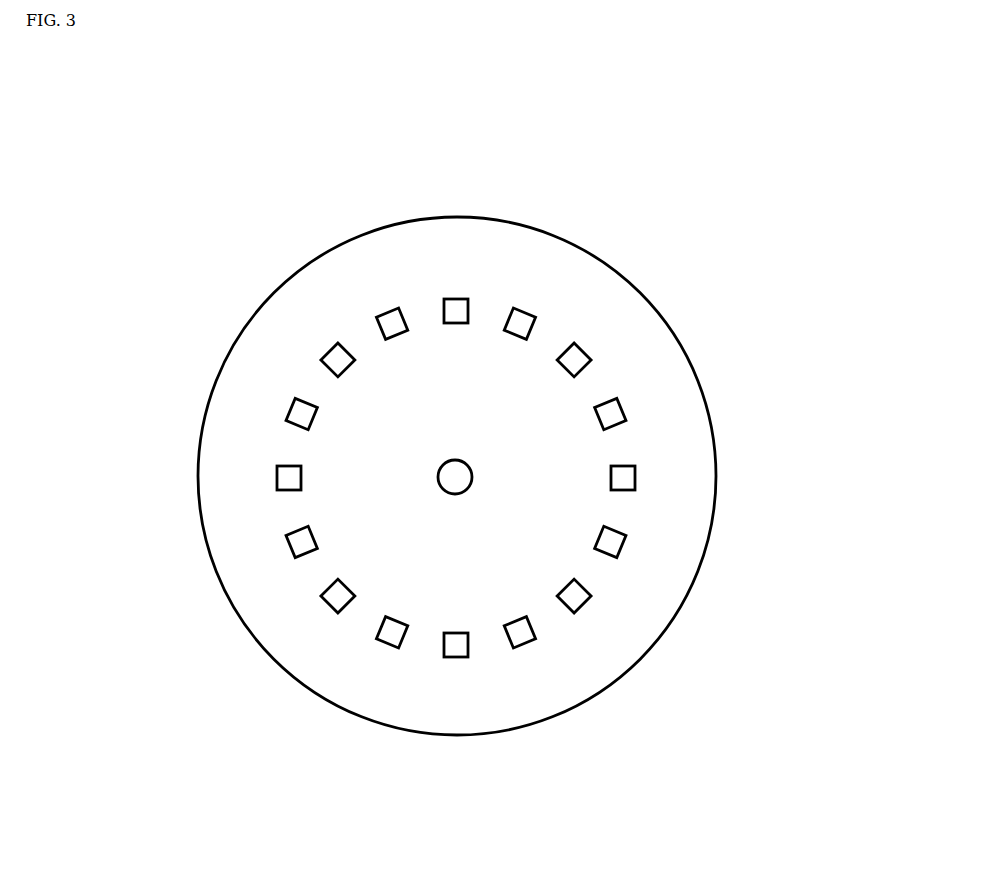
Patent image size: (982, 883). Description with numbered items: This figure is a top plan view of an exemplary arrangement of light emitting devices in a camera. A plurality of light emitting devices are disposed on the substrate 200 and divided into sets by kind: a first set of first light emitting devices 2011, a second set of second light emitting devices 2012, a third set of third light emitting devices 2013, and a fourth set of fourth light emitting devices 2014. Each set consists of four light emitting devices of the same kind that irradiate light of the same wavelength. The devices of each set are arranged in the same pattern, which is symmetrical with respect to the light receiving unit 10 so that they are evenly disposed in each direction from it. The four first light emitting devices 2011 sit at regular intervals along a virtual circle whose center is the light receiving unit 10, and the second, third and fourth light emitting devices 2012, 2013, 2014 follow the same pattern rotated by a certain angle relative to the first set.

The substrate 200 is at (537, 248).
The light receiving unit 10 is at (455, 477).
The first light emitting devices 2011 is at (457, 310).
The second light emitting devices 2012 is at (520, 320).
The third light emitting devices 2013 is at (575, 358).
The fourth light emitting devices 2014 is at (612, 413).